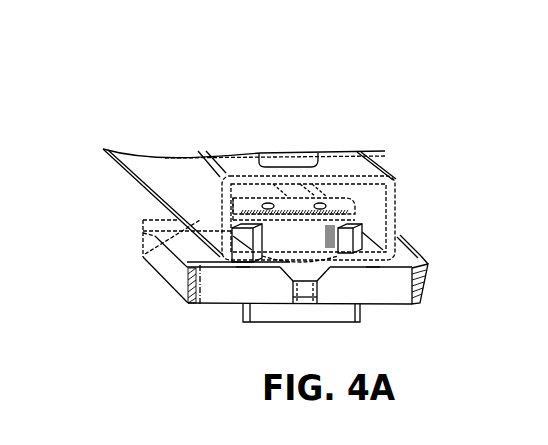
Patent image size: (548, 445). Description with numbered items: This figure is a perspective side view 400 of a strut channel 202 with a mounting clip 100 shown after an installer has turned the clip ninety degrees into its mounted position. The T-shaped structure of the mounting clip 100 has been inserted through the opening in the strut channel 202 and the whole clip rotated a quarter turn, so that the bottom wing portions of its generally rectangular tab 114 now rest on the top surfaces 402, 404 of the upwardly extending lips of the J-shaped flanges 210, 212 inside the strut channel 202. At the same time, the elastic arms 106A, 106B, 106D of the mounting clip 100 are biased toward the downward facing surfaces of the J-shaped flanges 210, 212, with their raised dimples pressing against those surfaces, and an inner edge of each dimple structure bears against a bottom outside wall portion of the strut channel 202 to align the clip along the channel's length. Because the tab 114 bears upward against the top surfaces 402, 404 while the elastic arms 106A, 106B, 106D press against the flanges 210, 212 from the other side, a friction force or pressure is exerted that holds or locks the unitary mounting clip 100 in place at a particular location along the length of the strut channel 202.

The perspective side view 400 is at (113, 124).
The mounting clip 100 is at (134, 246).
The elastic arm 106A is at (158, 268).
The elastic arm 106B is at (428, 266).
The elastic arm 106D is at (178, 222).
The strut channel 202 is at (379, 155).
The generally rectangular tab 114 is at (372, 205).
The top surface 402 is at (232, 222).
The top surface 404 is at (382, 231).
The J-shaped flange 210 is at (243, 265).
The J-shaped flange 212 is at (373, 264).